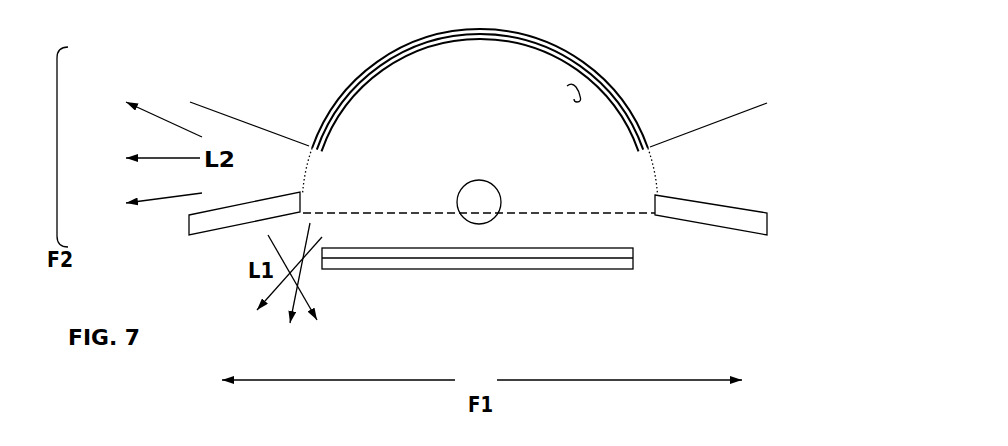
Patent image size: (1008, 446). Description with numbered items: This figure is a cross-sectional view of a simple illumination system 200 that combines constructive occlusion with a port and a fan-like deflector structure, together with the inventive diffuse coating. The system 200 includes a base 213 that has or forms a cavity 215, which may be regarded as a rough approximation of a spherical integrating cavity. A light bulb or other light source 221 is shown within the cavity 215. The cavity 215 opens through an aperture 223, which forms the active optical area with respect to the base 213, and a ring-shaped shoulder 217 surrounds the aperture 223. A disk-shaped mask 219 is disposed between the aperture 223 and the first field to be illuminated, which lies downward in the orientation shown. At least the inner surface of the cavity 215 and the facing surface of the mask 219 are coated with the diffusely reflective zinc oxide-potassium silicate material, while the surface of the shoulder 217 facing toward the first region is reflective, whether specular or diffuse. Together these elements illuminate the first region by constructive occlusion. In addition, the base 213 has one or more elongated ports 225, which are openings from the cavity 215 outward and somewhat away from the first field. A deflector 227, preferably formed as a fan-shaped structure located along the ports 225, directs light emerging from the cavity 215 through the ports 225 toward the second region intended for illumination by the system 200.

The illumination system 200 is at (770, 80).
The base 213 is at (355, 80).
The cavity 215 is at (583, 84).
The ring-shaped shoulder 217 is at (511, 231).
The disk-shaped mask 219 is at (634, 270).
The light source 221 is at (503, 202).
The aperture 223 is at (624, 218).
The elongated port 225 is at (659, 172).
The deflector 227 is at (768, 108).